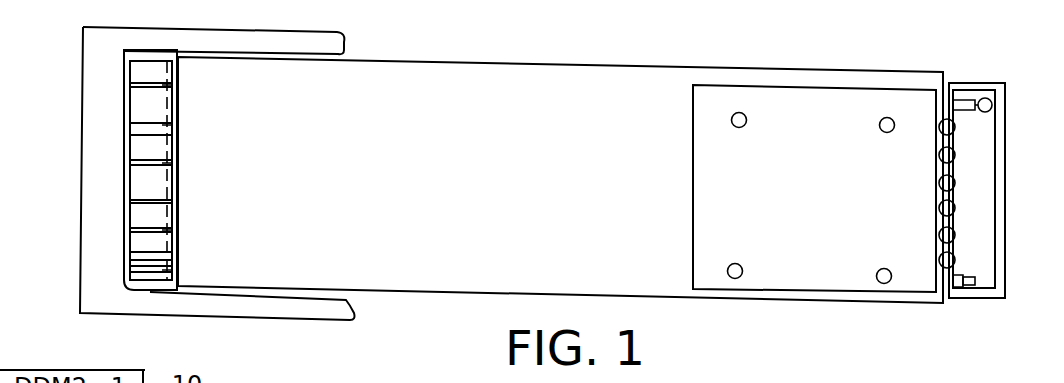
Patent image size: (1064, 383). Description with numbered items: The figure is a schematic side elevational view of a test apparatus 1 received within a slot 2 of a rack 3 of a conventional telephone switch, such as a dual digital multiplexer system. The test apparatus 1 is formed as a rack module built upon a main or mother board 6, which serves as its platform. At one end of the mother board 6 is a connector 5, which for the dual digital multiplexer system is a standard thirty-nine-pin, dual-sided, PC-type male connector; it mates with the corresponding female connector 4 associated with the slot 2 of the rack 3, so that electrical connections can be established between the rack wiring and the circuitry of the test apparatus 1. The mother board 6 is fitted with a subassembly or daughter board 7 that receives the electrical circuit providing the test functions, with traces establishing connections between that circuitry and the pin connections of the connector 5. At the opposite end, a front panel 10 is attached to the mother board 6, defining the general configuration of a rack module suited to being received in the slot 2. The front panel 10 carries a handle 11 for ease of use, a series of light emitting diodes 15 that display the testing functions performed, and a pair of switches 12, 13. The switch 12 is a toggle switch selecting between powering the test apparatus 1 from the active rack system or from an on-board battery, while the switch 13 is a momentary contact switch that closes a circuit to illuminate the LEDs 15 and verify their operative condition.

The test apparatus 1 is at (560, 206).
The slot 2 is at (323, 42).
The rack 3 is at (100, 86).
The connector 4 is at (120, 193).
The connector 5 is at (176, 78).
The mother board 6 is at (515, 147).
The daughter board 7 is at (825, 135).
The front panel 10 is at (1001, 225).
The handle 11 is at (1008, 206).
The switch 12 is at (970, 110).
The switch 13 is at (967, 276).
The light emitting diodes 15 is at (955, 236).